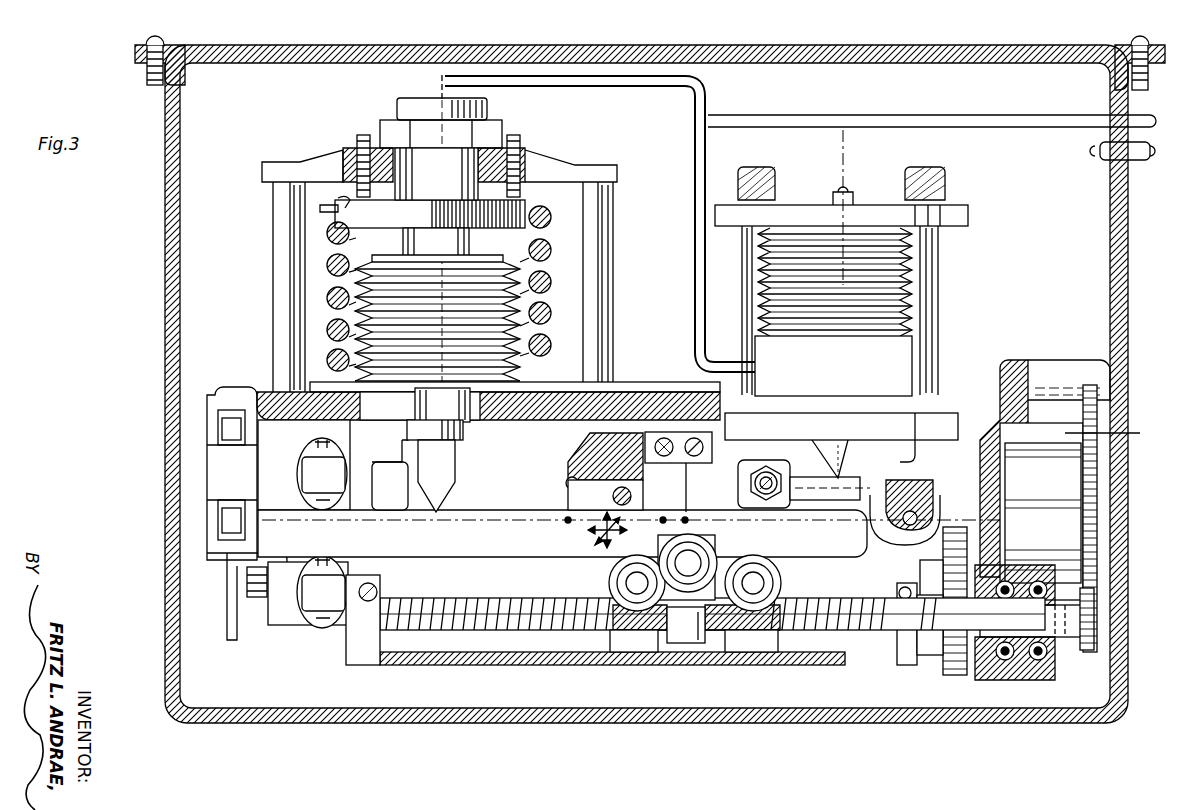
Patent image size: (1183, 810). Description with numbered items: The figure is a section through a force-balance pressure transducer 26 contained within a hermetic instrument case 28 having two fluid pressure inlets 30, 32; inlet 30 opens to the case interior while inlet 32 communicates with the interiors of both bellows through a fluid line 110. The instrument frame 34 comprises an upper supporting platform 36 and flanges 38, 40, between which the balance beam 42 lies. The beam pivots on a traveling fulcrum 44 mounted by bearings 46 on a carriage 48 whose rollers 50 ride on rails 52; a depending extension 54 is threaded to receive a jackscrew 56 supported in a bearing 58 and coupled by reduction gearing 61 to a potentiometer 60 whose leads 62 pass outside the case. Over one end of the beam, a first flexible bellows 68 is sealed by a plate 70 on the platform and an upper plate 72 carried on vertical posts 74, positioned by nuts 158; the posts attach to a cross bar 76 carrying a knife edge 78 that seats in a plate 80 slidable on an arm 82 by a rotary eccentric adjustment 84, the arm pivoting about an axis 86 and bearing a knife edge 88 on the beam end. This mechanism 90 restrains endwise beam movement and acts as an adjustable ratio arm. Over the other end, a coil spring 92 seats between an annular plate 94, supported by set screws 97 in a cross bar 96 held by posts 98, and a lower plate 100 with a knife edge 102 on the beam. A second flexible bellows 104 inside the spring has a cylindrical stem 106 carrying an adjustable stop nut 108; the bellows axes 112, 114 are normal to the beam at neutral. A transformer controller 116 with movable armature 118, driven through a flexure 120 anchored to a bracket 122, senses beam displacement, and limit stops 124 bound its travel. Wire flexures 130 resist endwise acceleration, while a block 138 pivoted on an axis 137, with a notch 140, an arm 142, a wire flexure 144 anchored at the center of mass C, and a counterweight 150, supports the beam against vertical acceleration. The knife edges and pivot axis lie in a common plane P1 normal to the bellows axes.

The transducer 26 is at (250, 324).
The instrument case 28 is at (1128, 190).
The fluid pressure inlet 30 is at (1142, 150).
The fluid pressure inlet 32 is at (1148, 116).
The instrument frame 34 is at (272, 398).
The supporting platform 36 is at (655, 397).
The flange 38 is at (366, 484).
The flange 40 is at (995, 470).
The balance beam 42 is at (487, 545).
The traveling fulcrum 44 is at (688, 580).
The bearings 46 is at (695, 556).
The carriage 48 is at (686, 643).
The rollers 50 is at (612, 580).
The rails 52 is at (628, 660).
The depending extension 54 is at (697, 645).
The jackscrew 56 is at (517, 595).
The bearing 58 is at (1050, 670).
The potentiometer 60 is at (1041, 511).
The reduction gearing 61 is at (1100, 600).
The leads 62 is at (1130, 436).
The first flexible bellows 68 is at (912, 284).
The plate 70 is at (833, 366).
The plate 72 is at (812, 208).
The vertical posts 74 is at (742, 248).
The cross bar 76 is at (841, 426).
The knife edge 78 is at (845, 470).
The plate 80 is at (800, 476).
The arm 82 is at (872, 490).
The rotary eccentric adjustment 84 is at (772, 466).
The axis 86 is at (920, 516).
The knife edge 88 is at (842, 510).
The mechanism 90 is at (848, 460).
The coil spring 92 is at (334, 250).
The annular plate 94 is at (340, 208).
The cross bar 96 is at (300, 158).
The adjustable set screws 97 is at (362, 138).
The posts 98 is at (273, 292).
The plate 100 is at (420, 405).
The knife edge 102 is at (433, 513).
The second flexible bellows 104 is at (440, 275).
The cylindrical stem 106 is at (452, 200).
The adjustable stop nut 108 is at (485, 113).
The fluid line 110 is at (698, 107).
The axis 112 is at (841, 162).
The axis 114 is at (440, 92).
The transformer controller 116 is at (203, 458).
The movable armature 118 is at (240, 510).
The flexure 120 is at (226, 560).
The bracket 122 is at (238, 622).
The limit stops 124 is at (336, 490).
The wire flexures 130 is at (663, 516).
The axis 137 is at (613, 496).
The block 138 is at (585, 450).
The notch 140 is at (568, 478).
The arm 142 is at (700, 462).
The wire flexure 144 is at (690, 480).
The counterweight 150 is at (394, 462).
The nuts 158 is at (758, 180).
The center of mass C is at (688, 518).
The plane P1 is at (772, 540).